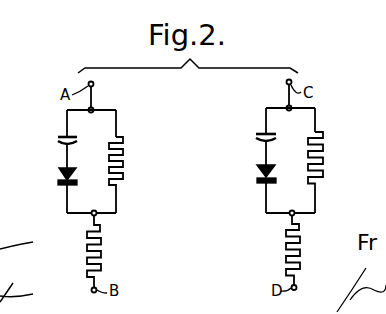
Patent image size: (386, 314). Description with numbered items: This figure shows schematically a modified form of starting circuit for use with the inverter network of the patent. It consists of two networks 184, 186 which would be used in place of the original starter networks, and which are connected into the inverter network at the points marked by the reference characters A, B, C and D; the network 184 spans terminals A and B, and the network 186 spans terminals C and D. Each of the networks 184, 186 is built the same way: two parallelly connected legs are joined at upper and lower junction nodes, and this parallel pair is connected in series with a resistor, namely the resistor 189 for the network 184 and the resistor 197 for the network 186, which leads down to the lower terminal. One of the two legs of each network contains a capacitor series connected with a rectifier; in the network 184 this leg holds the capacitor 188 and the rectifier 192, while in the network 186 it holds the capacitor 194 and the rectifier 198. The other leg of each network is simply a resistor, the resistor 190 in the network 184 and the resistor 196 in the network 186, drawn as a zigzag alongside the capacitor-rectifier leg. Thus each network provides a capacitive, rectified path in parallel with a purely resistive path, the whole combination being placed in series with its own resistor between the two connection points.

The network 184 is at (153, 108).
The network 186 is at (251, 108).
The capacitor 188 is at (57, 137).
The resistor 189 is at (101, 258).
The resistor 190 is at (124, 178).
The rectifier 192 is at (57, 184).
The capacitor 194 is at (255, 135).
The resistor 196 is at (324, 152).
The resistor 197 is at (286, 256).
The rectifier 198 is at (256, 167).